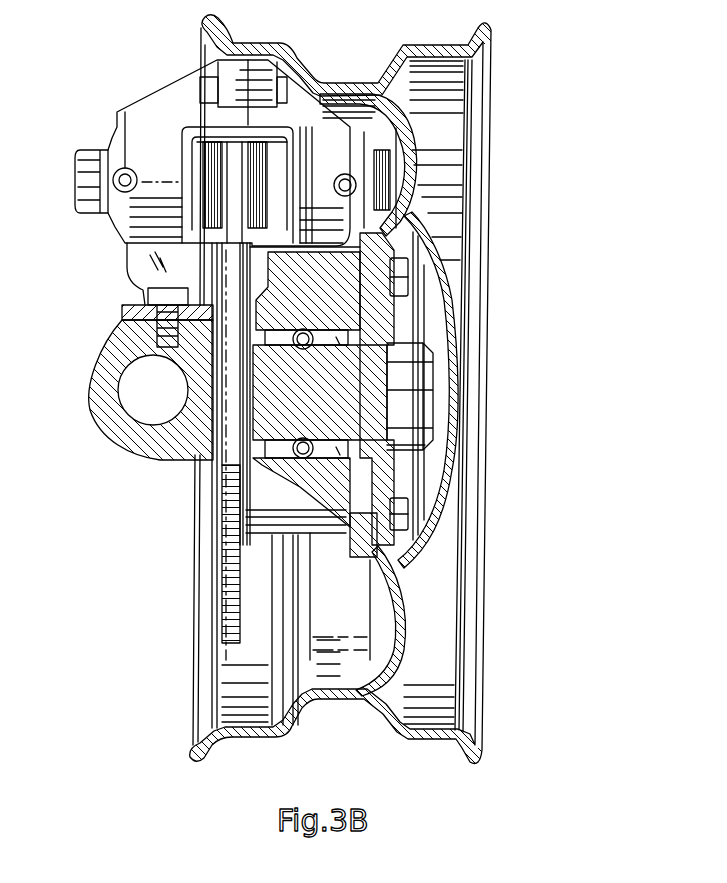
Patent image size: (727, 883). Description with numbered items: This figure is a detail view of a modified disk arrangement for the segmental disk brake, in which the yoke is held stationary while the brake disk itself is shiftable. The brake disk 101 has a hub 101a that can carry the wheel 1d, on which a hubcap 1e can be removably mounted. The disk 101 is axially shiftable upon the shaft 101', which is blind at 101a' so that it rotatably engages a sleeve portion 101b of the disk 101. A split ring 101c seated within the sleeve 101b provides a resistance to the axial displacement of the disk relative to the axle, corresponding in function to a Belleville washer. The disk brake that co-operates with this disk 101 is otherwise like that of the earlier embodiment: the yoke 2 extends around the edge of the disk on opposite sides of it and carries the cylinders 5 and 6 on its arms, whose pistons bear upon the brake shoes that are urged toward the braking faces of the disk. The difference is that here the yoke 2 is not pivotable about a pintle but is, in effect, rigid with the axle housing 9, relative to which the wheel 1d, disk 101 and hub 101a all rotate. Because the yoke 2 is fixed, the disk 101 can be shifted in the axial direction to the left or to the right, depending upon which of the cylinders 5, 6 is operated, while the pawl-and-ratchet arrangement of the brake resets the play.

The yoke 2 is at (183, 84).
The cylinder 6 is at (133, 128).
The cylinder 5 is at (413, 129).
The hubcap 1e is at (449, 255).
The wheel 1d is at (407, 640).
The axle housing 9 is at (93, 363).
The brake disk 101 is at (193, 485).
The shaft 101' is at (240, 488).
The hub 101a is at (311, 617).
The blind portion of shaft 101a' is at (471, 396).
The sleeve portion 101b is at (385, 337).
The split ring 101c is at (320, 330).